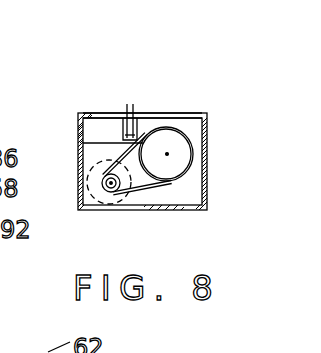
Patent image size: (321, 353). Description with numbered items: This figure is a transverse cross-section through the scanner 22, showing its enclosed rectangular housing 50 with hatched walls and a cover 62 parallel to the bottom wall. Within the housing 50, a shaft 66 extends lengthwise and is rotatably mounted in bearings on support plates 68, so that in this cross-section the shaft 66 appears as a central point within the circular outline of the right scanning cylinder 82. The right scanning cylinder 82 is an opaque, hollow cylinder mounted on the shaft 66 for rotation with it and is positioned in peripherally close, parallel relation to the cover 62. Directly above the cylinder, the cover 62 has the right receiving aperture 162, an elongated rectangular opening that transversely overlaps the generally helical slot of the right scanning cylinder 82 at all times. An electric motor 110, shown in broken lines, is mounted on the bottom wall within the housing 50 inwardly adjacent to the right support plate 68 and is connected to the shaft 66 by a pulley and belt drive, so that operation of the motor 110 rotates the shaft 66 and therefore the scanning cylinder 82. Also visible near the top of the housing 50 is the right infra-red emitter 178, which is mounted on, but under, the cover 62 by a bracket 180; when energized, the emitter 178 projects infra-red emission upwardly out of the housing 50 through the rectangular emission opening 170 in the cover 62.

The scanner 22 is at (92, 100).
The housing 50 is at (214, 109).
The cover 62 is at (187, 113).
The right receiving aperture 162 is at (170, 113).
The emission opening 170 is at (132, 113).
The right infra-red emitter 178 is at (129, 115).
The bracket 180 is at (133, 131).
The right scanning cylinder 82 is at (190, 137).
The shaft 66 is at (167, 156).
The support plate 68 is at (185, 185).
The electric motor 110 is at (132, 213).